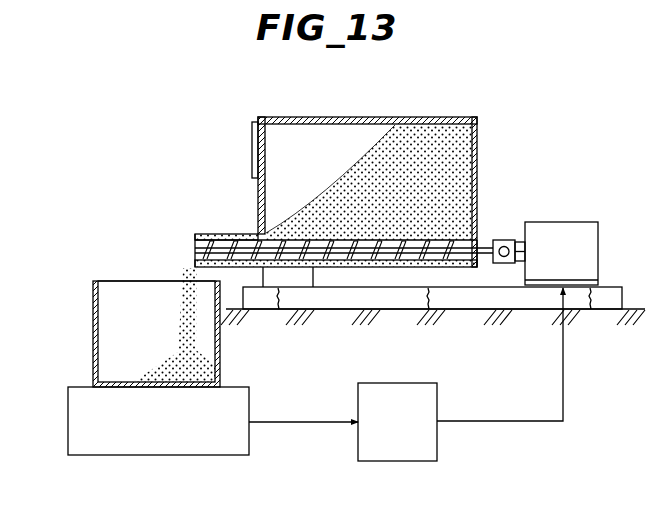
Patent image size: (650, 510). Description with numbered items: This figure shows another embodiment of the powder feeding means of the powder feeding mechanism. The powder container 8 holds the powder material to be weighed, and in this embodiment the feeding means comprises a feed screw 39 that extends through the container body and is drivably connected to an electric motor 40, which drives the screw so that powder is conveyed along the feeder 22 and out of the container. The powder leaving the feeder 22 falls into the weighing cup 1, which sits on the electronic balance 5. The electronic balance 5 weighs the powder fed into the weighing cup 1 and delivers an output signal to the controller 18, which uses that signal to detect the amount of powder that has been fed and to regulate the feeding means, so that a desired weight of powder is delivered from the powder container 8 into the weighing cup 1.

The weighing cup 1 is at (93, 327).
The electronic balance 5 is at (68, 422).
The powder container 8 is at (385, 115).
The controller 18 is at (437, 392).
The feeder 22 is at (205, 232).
The feed screw 39 is at (420, 245).
The electric motor 40 is at (578, 222).